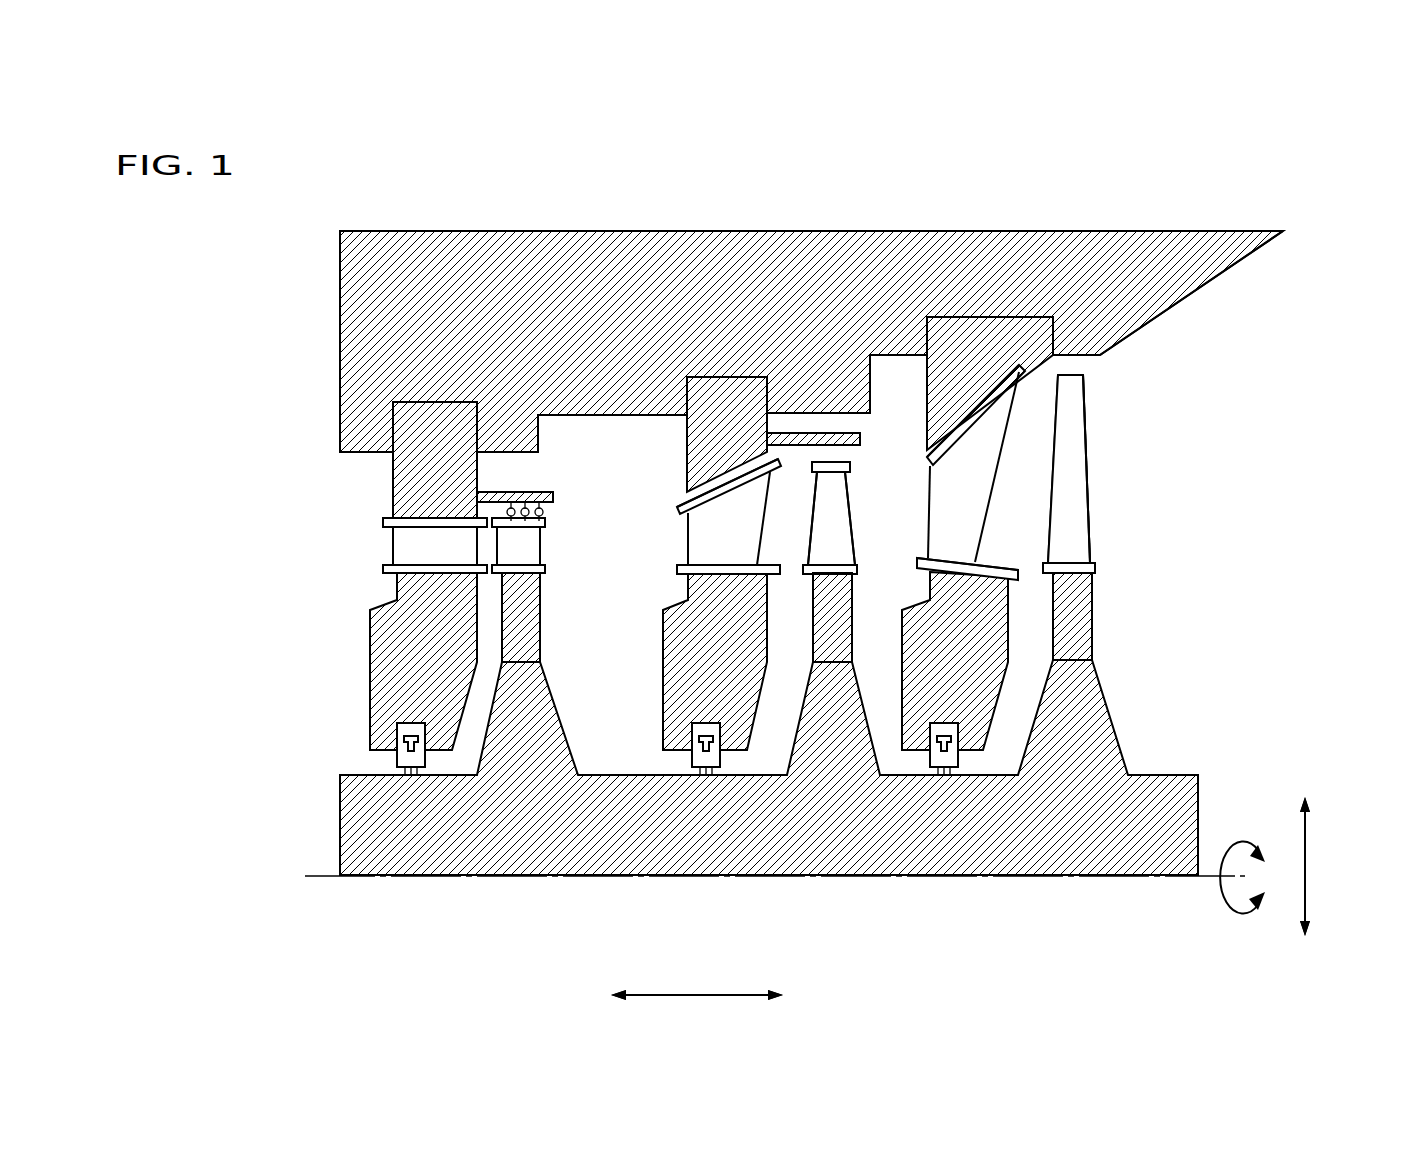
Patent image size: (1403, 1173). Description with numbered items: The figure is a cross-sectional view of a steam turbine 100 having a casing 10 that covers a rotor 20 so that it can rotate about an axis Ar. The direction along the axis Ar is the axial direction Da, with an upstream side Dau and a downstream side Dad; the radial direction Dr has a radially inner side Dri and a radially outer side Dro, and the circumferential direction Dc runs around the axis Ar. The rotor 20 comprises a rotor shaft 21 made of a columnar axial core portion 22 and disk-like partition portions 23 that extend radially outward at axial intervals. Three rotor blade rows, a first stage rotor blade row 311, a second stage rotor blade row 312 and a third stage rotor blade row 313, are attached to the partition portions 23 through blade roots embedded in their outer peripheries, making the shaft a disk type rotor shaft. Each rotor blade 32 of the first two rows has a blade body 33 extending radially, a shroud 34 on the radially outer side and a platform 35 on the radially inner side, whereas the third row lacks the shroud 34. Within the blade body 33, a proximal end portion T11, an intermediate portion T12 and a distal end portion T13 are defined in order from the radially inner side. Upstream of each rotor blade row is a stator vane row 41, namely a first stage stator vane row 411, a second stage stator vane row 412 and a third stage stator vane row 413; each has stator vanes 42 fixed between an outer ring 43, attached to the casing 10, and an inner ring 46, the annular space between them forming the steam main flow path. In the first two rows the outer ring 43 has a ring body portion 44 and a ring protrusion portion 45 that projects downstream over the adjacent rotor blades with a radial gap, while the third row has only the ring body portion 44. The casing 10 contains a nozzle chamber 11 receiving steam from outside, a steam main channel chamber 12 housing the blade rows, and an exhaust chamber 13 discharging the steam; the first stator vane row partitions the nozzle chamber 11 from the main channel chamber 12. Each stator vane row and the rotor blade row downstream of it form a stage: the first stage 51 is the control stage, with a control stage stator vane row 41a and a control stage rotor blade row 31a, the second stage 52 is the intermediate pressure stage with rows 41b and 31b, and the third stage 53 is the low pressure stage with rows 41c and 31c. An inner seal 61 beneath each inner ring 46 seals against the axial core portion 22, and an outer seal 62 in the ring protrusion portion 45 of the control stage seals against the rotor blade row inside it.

The steam turbine 100 is at (1316, 230).
The casing 10 is at (340, 402).
The nozzle chamber 11 is at (357, 552).
The steam main channel chamber 12 is at (627, 548).
The exhaust chamber 13 is at (1262, 290).
The rotor 20 is at (303, 842).
The rotor shaft 21 is at (378, 882).
The axial core portion 22 is at (340, 798).
The partition portion 23 is at (517, 643).
The axis Ar is at (305, 878).
The control stage rotor blade row 31a is at (505, 545).
The intermediate pressure stage rotor blade row 31b is at (830, 530).
The low pressure stage rotor blade row 31c is at (1077, 440).
The first stage rotor blade row 311 is at (493, 595).
The second stage rotor blade row 312 is at (870, 553).
The third stage rotor blade row 313 is at (1100, 520).
The rotor blade 32 is at (777, 470).
The blade body 33 is at (532, 540).
The shroud 34 is at (546, 523).
The platform 35 is at (546, 573).
The stator vane row 41 is at (807, 366).
The control stage stator vane row 41a is at (425, 545).
The intermediate pressure stage stator vane row 41b is at (708, 455).
The low pressure stage stator vane row 41c is at (985, 395).
The first stage stator vane row 411 is at (372, 590).
The second stage stator vane row 412 is at (785, 557).
The third stage stator vane row 413 is at (1022, 558).
The stator vane 42 is at (390, 553).
The outer ring 43 is at (848, 436).
The ring body portion 44 is at (390, 503).
The ring protrusion portion 45 is at (785, 433).
The inner ring 46 is at (375, 627).
The first stage 51 is at (425, 146).
The second stage 52 is at (720, 146).
The third stage 53 is at (1097, 173).
The inner seal 61 is at (397, 732).
The outer seal 62 is at (538, 506).
The proximal end portion T11 is at (1093, 565).
The intermediate portion T12 is at (1083, 465).
The distal end portion T13 is at (1080, 376).
The axial direction Da is at (697, 1010).
The upstream side Dau is at (594, 996).
The downstream side Dad is at (797, 996).
The radial direction Dr is at (1320, 866).
The radially outer side Dro is at (1301, 791).
The radially inner side Dri is at (1303, 944).
The circumferential direction Dc is at (1242, 861).